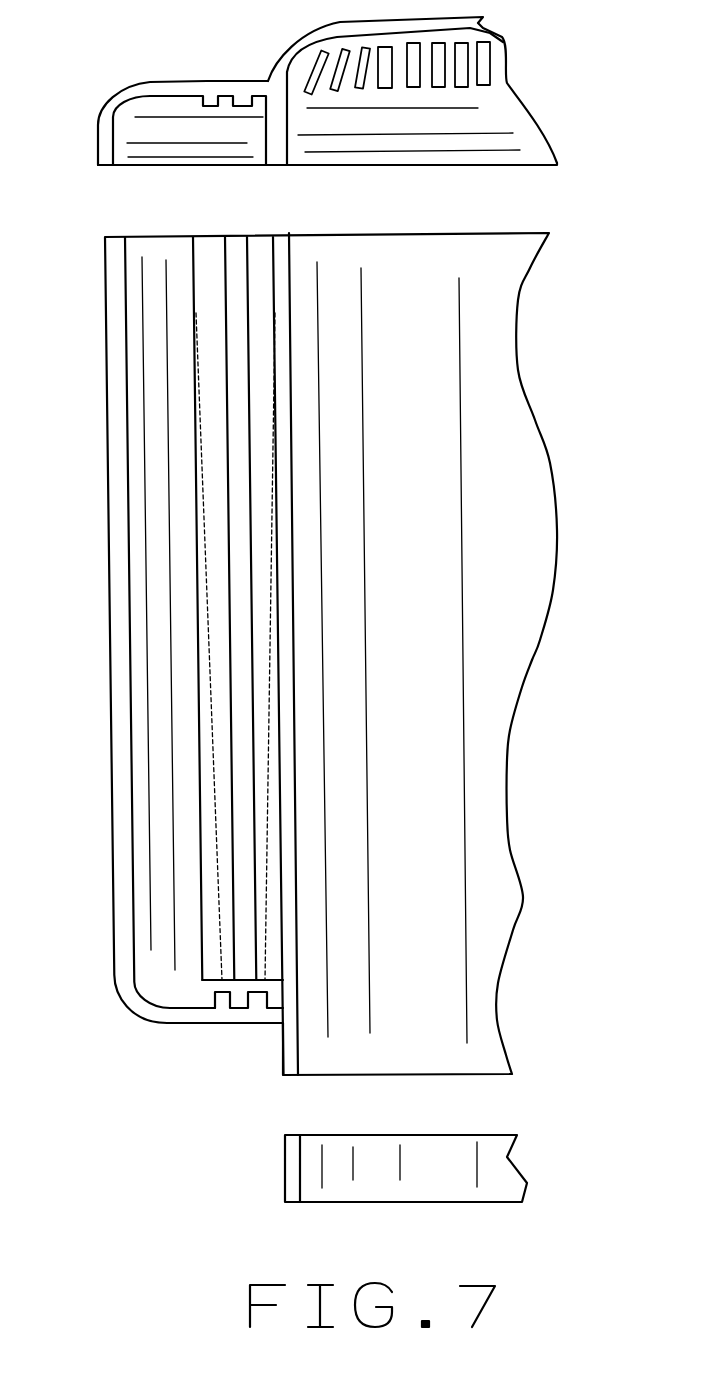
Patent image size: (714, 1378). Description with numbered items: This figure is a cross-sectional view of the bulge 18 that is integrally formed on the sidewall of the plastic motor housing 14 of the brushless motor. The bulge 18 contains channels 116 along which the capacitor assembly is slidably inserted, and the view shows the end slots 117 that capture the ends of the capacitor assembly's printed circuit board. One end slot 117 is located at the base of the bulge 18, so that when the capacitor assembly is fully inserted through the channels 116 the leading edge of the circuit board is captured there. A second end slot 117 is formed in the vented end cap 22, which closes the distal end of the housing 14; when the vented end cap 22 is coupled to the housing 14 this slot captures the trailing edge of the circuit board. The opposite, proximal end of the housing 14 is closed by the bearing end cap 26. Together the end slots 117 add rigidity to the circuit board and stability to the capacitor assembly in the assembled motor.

The motor housing 14 is at (460, 300).
The bulge 18 is at (150, 532).
The vented end cap 22 is at (477, 115).
The bearing end cap 26 is at (452, 1178).
The channels 116 is at (235, 257).
The end slots 117 is at (230, 100).